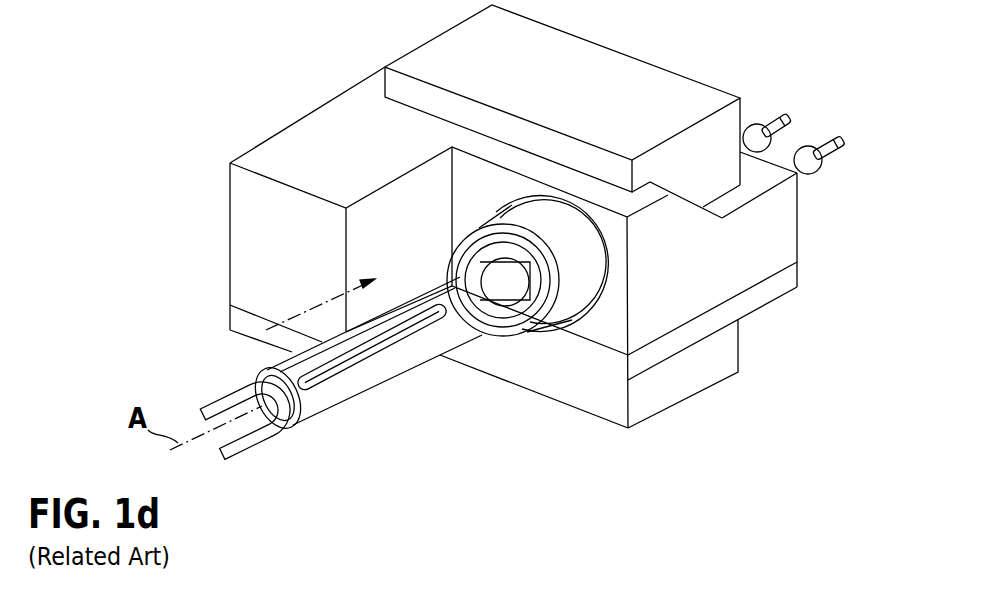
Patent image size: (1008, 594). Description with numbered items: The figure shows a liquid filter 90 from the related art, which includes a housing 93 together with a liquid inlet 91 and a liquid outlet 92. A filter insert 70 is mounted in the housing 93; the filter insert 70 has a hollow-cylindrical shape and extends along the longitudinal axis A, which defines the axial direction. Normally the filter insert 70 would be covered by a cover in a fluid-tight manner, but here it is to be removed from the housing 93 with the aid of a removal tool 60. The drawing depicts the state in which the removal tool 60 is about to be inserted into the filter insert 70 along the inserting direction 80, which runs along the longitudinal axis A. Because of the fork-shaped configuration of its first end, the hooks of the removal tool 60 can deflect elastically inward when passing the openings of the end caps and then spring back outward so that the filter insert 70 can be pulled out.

The removal tool 60 is at (403, 360).
The filter insert 70 is at (557, 345).
The inserting direction 80 is at (307, 305).
The liquid filter 90 is at (816, 230).
The liquid inlet 91 is at (805, 162).
The liquid outlet 92 is at (752, 122).
The housing 93 is at (617, 88).